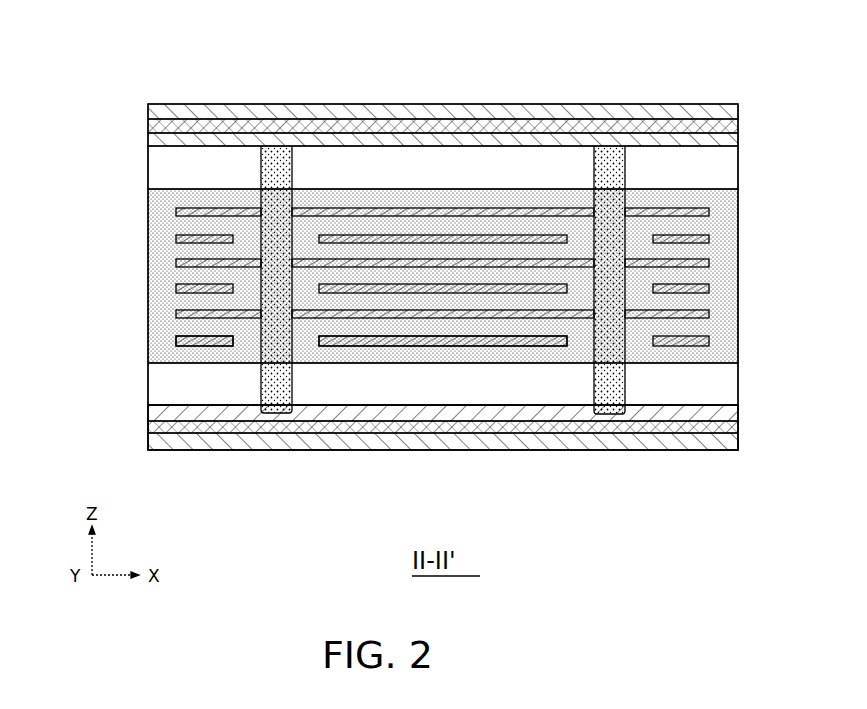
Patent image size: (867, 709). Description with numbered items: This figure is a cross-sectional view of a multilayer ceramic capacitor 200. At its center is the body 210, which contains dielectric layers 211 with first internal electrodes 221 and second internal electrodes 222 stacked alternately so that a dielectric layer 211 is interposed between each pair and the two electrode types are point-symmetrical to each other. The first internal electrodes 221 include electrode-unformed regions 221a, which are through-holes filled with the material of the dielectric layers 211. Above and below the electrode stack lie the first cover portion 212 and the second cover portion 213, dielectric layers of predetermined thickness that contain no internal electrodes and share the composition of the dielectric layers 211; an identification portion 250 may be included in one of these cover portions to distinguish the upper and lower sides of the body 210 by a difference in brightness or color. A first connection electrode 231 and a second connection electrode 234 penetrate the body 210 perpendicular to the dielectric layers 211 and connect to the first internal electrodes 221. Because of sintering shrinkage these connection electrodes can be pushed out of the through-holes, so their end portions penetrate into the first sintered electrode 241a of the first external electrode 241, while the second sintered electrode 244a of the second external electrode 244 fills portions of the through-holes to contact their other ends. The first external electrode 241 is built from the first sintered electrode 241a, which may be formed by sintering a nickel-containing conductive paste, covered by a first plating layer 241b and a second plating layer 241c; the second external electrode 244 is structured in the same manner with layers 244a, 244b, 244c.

The multilayer ceramic capacitor 200 is at (288, 28).
The body 210 is at (422, 406).
The dielectric layers 211 is at (705, 302).
The first cover portion 212 is at (738, 378).
The second cover portion 213 is at (738, 167).
The first internal electrode 221 is at (163, 317).
The electrode-unformed region 221a is at (249, 341).
The second internal electrode 222 is at (709, 343).
The first connection electrode 231 is at (272, 152).
The second connection electrode 234 is at (611, 158).
The first external electrode 241 is at (60, 398).
The first sintered electrode 241a is at (148, 414).
The first plating layer 241b is at (148, 431).
The second plating layer 241c is at (148, 446).
The second external electrode 244 is at (60, 96).
The second sintered electrode 244a is at (148, 140).
The plating layer of second external electrode 244b is at (148, 126).
The outer plating layer of second external electrode 244c is at (148, 110).
The identification portion 250 is at (358, 408).